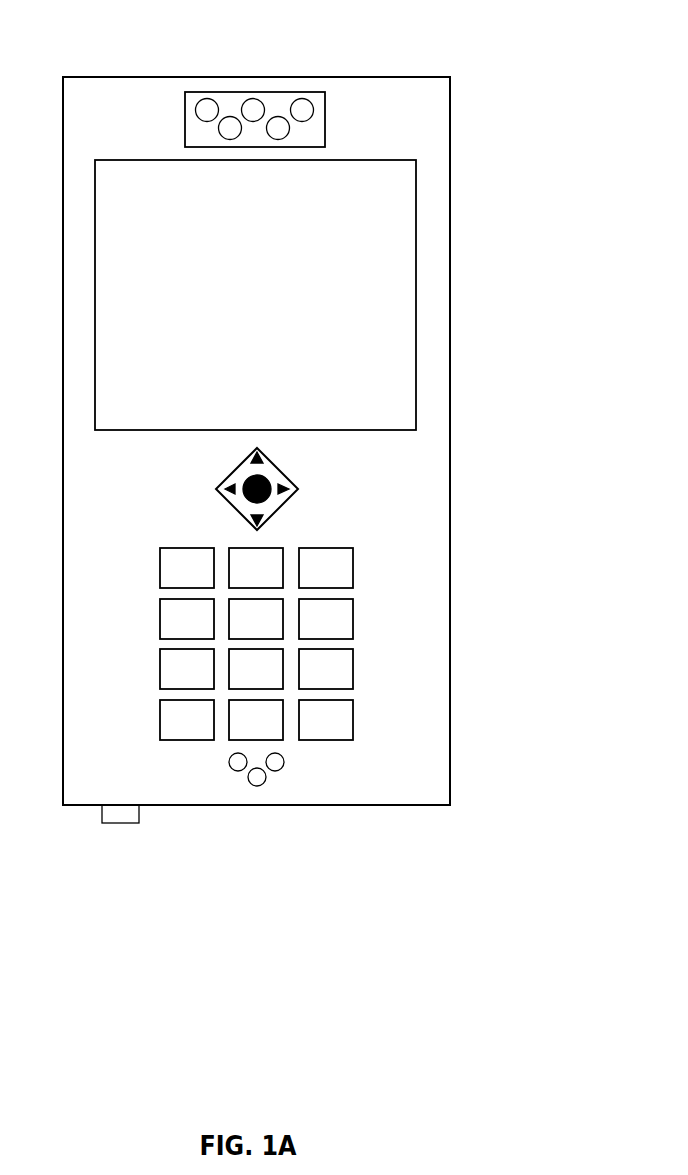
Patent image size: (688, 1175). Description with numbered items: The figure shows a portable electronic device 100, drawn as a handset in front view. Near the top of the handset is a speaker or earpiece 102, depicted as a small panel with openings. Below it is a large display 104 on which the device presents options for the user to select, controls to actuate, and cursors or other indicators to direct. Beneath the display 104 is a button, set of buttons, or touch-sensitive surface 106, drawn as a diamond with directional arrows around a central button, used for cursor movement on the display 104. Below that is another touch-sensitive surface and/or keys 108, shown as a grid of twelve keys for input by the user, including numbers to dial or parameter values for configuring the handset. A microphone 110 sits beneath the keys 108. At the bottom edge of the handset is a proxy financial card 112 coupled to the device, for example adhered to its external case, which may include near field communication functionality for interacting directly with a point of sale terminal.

The portable electronic device 100 is at (78, 76).
The speaker or earpiece 102 is at (285, 92).
The display 104 is at (476, 428).
The touch-sensitive surface 106 is at (476, 533).
The keys 108 is at (476, 747).
The microphone 110 is at (257, 786).
The proxy financial card 112 is at (119, 823).